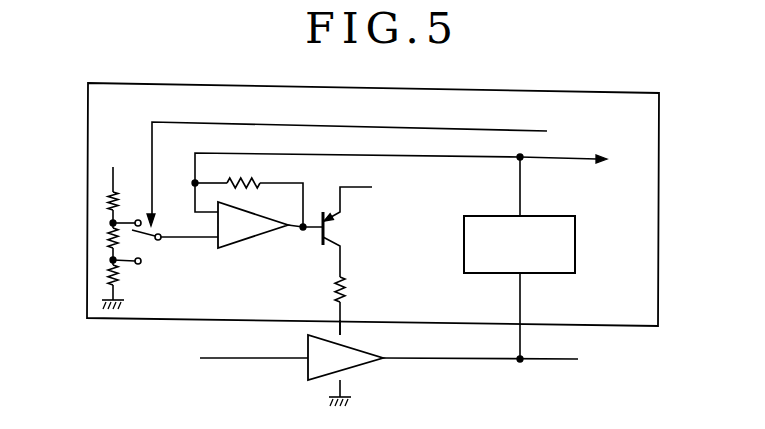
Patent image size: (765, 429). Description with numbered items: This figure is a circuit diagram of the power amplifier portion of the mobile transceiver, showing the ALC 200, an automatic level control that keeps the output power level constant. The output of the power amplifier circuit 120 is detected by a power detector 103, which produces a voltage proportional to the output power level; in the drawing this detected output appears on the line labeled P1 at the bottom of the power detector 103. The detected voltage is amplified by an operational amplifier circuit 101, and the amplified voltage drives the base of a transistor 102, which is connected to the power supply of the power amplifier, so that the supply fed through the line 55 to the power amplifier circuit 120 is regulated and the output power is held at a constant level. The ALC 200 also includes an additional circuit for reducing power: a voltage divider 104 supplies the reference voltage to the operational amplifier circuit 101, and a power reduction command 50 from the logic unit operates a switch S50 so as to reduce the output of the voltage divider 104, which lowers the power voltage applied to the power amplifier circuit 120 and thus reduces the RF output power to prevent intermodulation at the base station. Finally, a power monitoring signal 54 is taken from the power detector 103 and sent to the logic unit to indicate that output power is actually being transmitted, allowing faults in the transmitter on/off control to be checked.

The ALC 200 is at (659, 193).
The power reduction command 50 is at (347, 163).
The power monitoring signal 54 is at (401, 172).
The bias line 55 is at (342, 334).
The operational amplifier circuit 101 is at (240, 230).
The transistor 102 is at (330, 229).
The power detector 103 is at (575, 244).
The voltage divider 104 is at (105, 238).
The power amplifier circuit 120 is at (345, 360).
The switch S50 is at (150, 240).
The detected power signal P1 is at (534, 307).